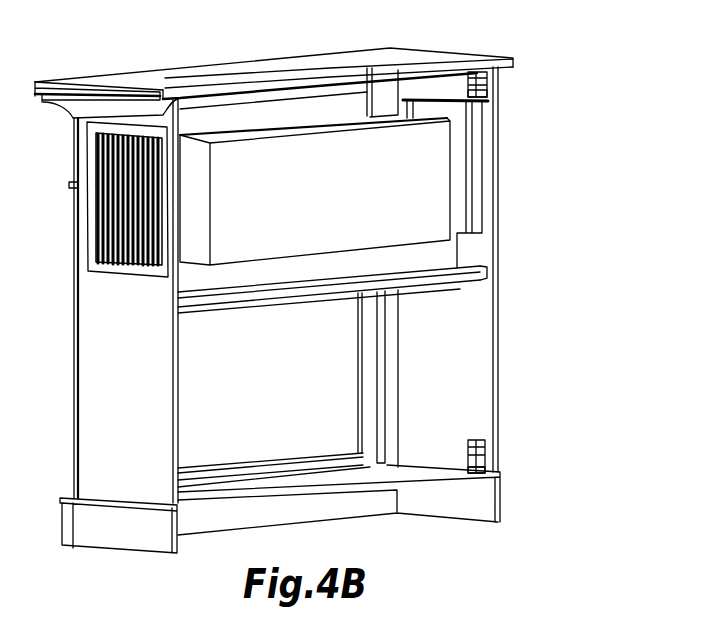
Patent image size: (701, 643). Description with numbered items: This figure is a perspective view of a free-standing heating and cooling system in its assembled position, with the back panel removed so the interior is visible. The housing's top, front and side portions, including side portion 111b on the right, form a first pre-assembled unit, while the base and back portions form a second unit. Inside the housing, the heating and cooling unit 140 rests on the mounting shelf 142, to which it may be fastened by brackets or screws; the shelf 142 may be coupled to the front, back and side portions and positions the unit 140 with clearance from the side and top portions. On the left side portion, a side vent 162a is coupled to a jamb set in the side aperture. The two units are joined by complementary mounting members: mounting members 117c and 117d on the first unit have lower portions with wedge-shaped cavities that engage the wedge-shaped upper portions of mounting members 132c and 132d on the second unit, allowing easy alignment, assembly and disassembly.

The side vent 162a is at (118, 218).
The heating and cooling unit 140 is at (420, 195).
The mounting shelf 142 is at (368, 297).
The side portion 111b is at (528, 269).
The mounting member 117d is at (484, 78).
The mounting member 132d is at (486, 94).
The mounting member 117c is at (483, 442).
The mounting member 132c is at (490, 472).